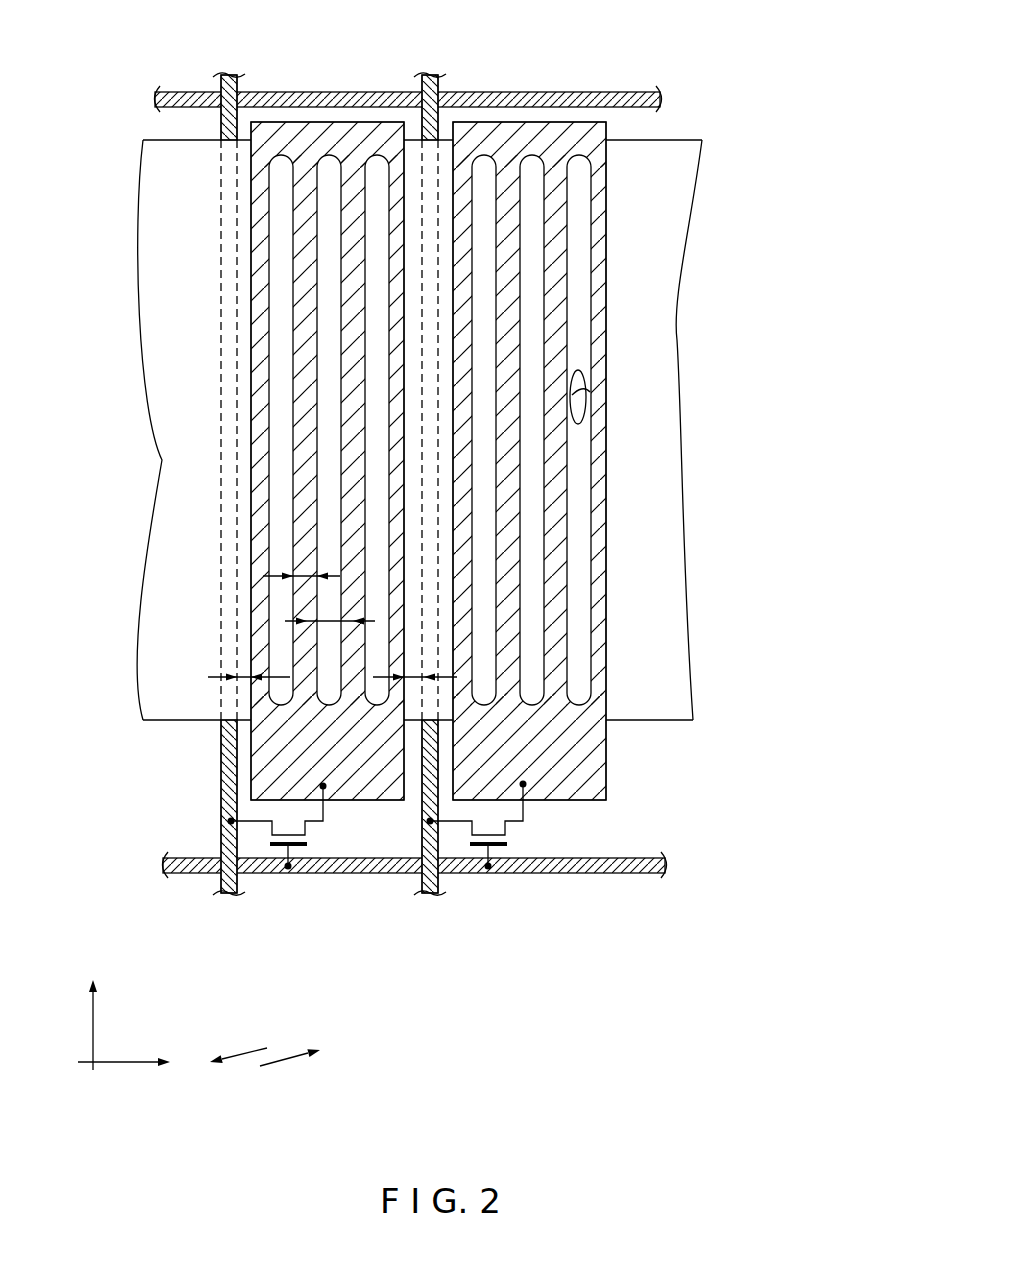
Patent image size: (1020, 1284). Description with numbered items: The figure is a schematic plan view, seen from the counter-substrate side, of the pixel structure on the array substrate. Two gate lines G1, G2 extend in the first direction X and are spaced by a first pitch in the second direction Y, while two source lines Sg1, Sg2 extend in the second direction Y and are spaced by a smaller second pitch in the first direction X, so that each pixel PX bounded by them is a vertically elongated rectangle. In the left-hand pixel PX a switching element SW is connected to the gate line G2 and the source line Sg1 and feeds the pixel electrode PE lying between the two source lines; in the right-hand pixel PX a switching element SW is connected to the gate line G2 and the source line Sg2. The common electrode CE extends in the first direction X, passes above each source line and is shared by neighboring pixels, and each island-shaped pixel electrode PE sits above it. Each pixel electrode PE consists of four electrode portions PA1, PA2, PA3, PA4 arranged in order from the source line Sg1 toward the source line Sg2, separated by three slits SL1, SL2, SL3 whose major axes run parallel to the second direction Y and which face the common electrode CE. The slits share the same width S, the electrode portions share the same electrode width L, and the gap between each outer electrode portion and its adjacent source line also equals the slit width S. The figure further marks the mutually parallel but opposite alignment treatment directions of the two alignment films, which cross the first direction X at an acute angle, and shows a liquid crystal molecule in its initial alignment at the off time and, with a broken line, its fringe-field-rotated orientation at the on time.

The source line Sg1 is at (222, 72).
The source line Sg2 is at (423, 72).
The gate line G1 is at (661, 95).
The gate line G2 is at (666, 862).
The pixel PX is at (338, 97).
The pixel electrode PE is at (265, 762).
The common electrode CE is at (663, 642).
The electrode portion PA1 is at (259, 317).
The electrode portion PA2 is at (300, 339).
The electrode portion PA3 is at (350, 368).
The electrode portion PA4 is at (396, 406).
The slit SL1 is at (264, 548).
The slit SL2 is at (311, 521).
The slit SL3 is at (357, 475).
The electrode width L is at (308, 578).
The slit width S is at (438, 680).
The switching element SW is at (320, 843).
The first direction X is at (135, 1063).
The second direction Y is at (93, 1007).